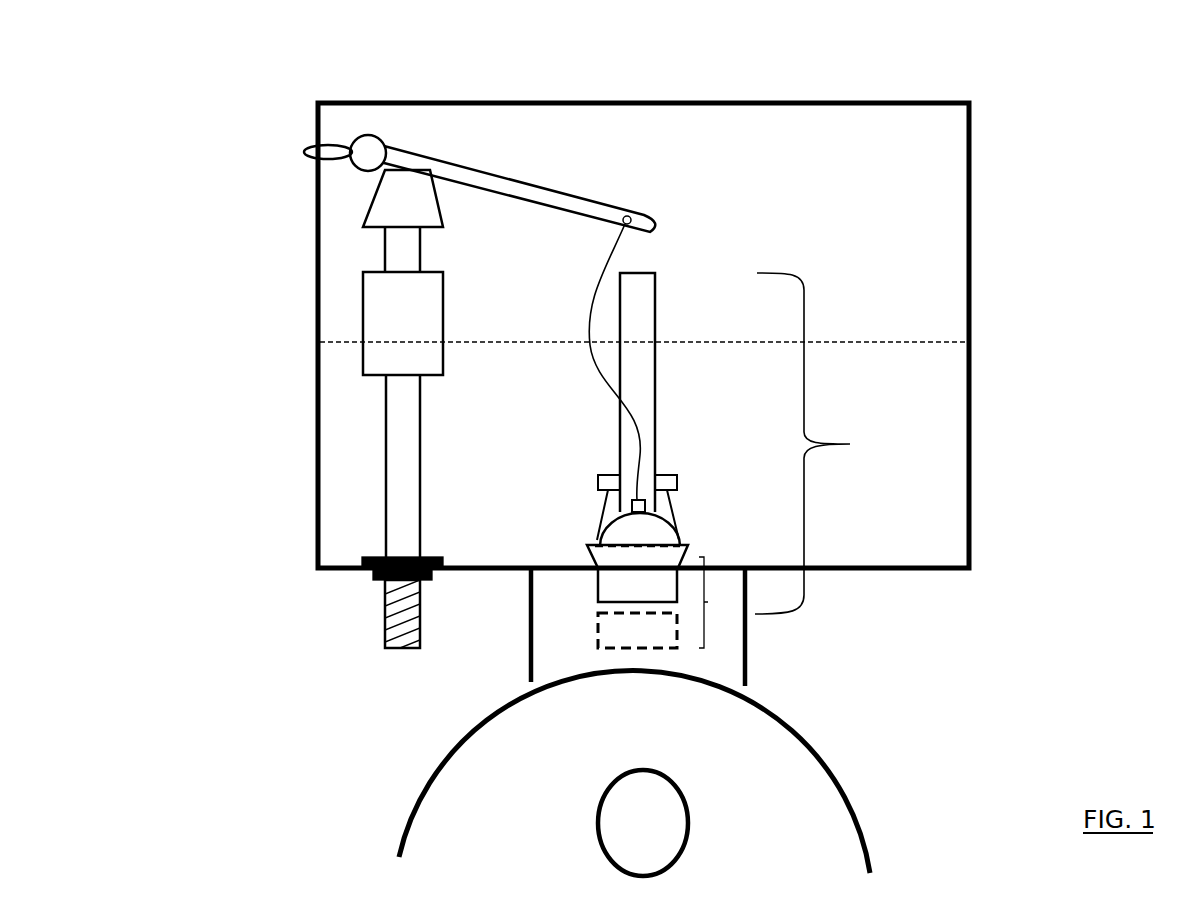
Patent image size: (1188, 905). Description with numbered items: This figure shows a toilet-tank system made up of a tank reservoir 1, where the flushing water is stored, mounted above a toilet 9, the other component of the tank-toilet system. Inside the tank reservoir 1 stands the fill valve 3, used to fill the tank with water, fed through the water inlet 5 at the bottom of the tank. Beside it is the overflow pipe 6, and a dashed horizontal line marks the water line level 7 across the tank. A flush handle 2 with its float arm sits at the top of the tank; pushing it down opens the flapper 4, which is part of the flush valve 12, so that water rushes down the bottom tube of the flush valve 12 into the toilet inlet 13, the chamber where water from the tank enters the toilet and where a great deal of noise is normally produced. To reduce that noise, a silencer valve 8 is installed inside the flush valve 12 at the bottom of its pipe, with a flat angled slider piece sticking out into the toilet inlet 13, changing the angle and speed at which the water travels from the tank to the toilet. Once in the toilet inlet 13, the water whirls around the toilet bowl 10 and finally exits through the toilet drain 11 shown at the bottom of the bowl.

The tank reservoir 1 is at (316, 306).
The flush handle 2 is at (358, 138).
The fill valve 3 is at (383, 463).
The flapper 4 is at (596, 533).
The water inlet 5 is at (383, 617).
The overflow pipe 6 is at (658, 317).
The water line level 7 is at (848, 343).
The silencer valve 8 is at (713, 615).
The toilet 9 is at (750, 662).
The toilet bowl 10 is at (395, 828).
The toilet drain 11 is at (690, 820).
The flush valve 12 is at (823, 443).
The toilet inlet 13 is at (552, 648).